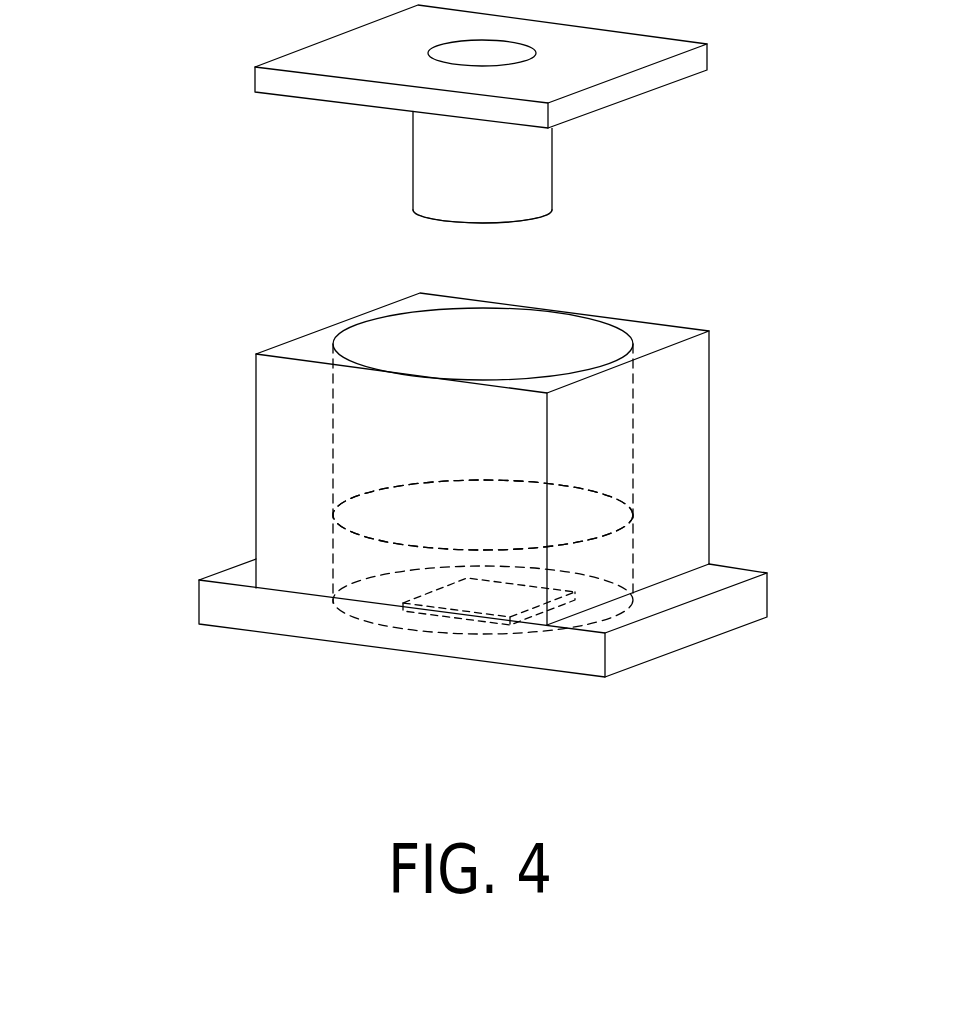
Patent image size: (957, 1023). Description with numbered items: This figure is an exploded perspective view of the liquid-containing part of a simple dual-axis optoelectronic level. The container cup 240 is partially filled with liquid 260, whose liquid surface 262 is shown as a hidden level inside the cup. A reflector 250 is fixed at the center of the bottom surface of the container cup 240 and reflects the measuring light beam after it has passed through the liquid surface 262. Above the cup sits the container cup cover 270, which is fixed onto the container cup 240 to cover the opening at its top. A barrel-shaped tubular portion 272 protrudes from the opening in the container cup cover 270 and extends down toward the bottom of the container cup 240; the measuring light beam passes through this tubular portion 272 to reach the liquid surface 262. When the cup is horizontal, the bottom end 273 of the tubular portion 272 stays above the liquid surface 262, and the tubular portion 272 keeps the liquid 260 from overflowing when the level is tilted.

The container cup 240 is at (692, 443).
The reflector 250 is at (418, 608).
The liquid 260 is at (483, 515).
The liquid surface 262 is at (370, 507).
The container cup cover 270 is at (703, 57).
The tubular portion 272 is at (540, 168).
The bottom end 273 is at (441, 222).